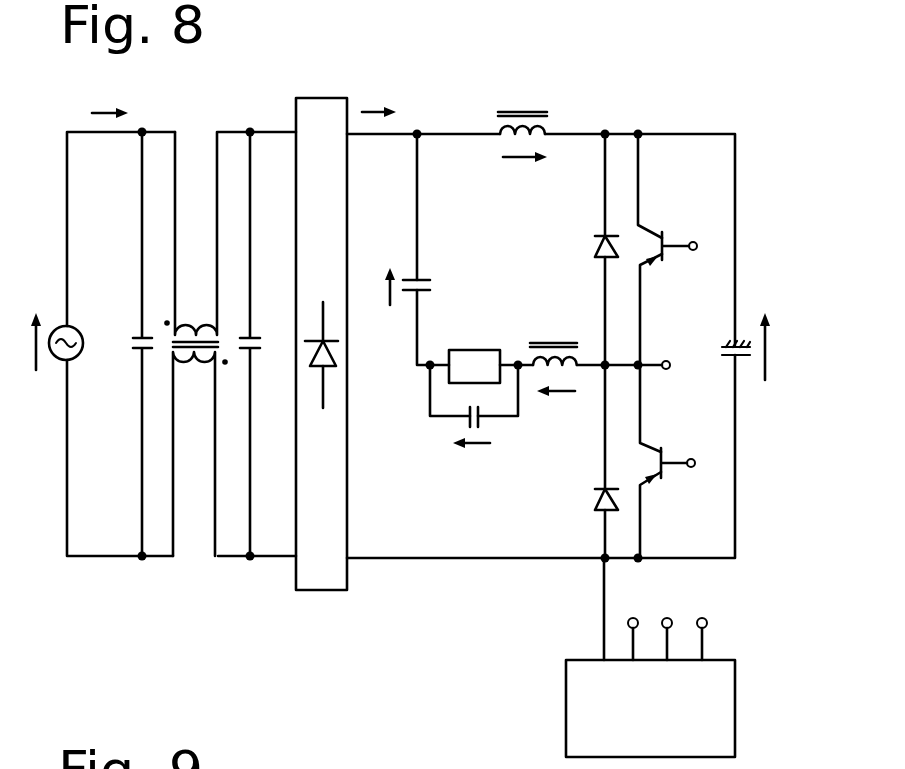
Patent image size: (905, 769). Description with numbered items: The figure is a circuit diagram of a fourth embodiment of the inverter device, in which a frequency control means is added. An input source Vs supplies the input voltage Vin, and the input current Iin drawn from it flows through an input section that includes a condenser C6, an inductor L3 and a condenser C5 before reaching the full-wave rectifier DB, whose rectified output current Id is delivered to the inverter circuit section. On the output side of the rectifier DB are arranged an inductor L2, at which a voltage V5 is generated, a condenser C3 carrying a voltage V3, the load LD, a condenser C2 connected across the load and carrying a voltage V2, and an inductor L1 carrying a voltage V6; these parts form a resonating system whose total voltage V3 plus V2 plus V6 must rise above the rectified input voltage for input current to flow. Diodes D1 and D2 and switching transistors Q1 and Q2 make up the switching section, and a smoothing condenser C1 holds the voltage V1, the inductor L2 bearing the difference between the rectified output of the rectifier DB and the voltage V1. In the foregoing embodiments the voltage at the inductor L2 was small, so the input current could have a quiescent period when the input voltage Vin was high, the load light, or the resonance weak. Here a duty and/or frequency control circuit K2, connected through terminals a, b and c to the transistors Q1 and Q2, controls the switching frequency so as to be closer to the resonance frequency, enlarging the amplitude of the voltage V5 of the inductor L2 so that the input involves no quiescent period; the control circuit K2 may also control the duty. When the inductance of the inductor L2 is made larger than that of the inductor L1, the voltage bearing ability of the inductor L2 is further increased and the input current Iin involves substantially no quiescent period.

The input source Vs is at (78, 331).
The input voltage Vin is at (39, 322).
The input current Iin is at (132, 109).
The input capacitor C6 is at (127, 344).
The transformer / inductor L3 is at (195, 344).
The capacitor C5 is at (263, 344).
The full-wave rectifier DB is at (321, 327).
The rectified current Id is at (394, 111).
The inductor L2 is at (522, 104).
The voltage of the inductor L2 V5 is at (525, 174).
The voltage at the condenser C3 V3 is at (393, 268).
The condenser C3 is at (435, 291).
The load LD is at (474, 367).
The inductor L1 is at (553, 337).
The voltage at the inductor L1 V6 is at (558, 408).
The condenser C2 is at (502, 430).
The voltage at the condenser C2 V2 is at (475, 461).
The diode D1 is at (585, 247).
The diode D2 is at (585, 504).
The transistor Q1 is at (667, 266).
The transistor Q2 is at (667, 485).
The smoothing condenser C1 is at (724, 368).
The voltage of the smoothing condenser V1 is at (765, 327).
The control terminal a is at (664, 434).
The control terminal b is at (680, 545).
The control terminal c is at (682, 496).
The duty and/or frequency control circuit K2 is at (566, 676).